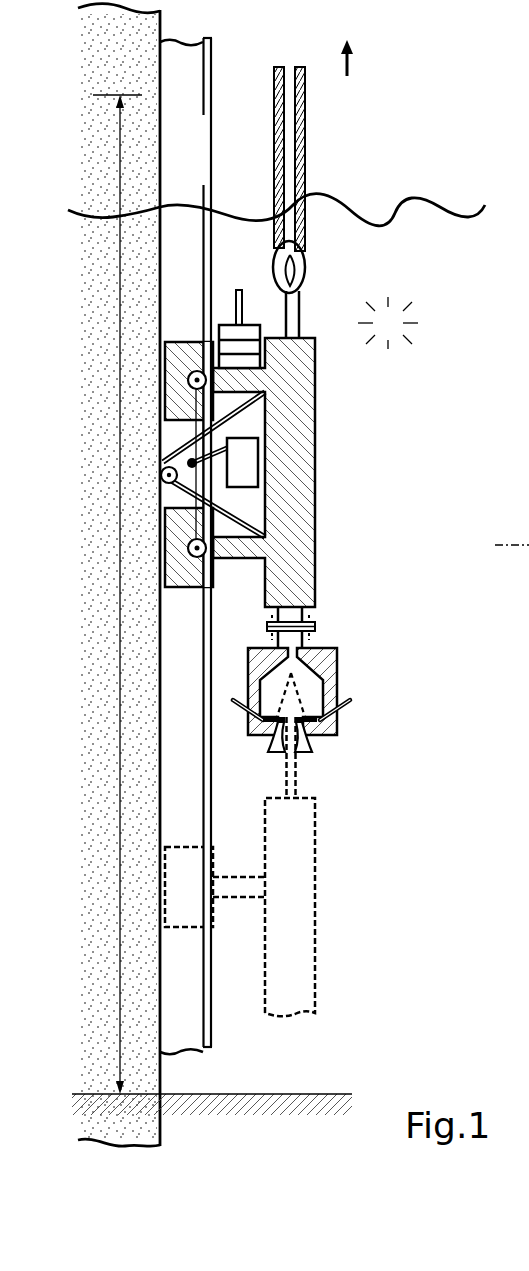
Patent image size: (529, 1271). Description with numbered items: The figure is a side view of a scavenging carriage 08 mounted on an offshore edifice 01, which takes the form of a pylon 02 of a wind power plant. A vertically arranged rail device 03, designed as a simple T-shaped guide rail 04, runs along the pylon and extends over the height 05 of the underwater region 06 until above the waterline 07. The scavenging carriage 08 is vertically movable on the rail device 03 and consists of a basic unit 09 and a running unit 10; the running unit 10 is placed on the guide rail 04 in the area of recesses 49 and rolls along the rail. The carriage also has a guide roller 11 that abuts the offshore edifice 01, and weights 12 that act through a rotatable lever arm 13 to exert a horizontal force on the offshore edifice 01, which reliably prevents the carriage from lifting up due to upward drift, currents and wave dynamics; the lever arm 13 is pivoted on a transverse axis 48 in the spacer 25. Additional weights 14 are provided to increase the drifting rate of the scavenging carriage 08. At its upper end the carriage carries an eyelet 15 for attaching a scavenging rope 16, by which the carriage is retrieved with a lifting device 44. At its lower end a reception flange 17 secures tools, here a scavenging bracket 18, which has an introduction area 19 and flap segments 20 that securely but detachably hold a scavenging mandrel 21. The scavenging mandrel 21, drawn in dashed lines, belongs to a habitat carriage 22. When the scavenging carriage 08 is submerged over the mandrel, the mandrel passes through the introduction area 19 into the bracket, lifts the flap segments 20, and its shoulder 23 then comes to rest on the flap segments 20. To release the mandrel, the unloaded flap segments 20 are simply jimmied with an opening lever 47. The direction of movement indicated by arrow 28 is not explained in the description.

The offshore edifice 01 is at (154, 574).
The pylon 02 is at (138, 32).
The rail device 03 is at (130, 922).
The guide rail 04 is at (178, 1030).
The height 05 is at (117, 594).
The underwater region 06 is at (388, 323).
The waterline 07 is at (397, 214).
The scavenging carriage 08 is at (279, 472).
The basic unit 09 is at (299, 472).
The running unit 10 is at (245, 550).
The guide roller 11 is at (162, 478).
The weights 12 is at (190, 462).
The lever arm 13 is at (242, 459).
The additional weights 14 is at (247, 332).
The eyelet 15 is at (305, 273).
The scavenging rope 16 is at (300, 194).
The reception flange 17 is at (316, 626).
The scavenging bracket 18 is at (308, 680).
The introduction area 19 is at (282, 750).
The flap segments 20 is at (312, 725).
The scavenging mandrel 21 is at (258, 678).
The habitat carriage 22 is at (293, 837).
The shoulder 23 is at (298, 710).
The spacer 25 is at (185, 442).
The vessel direction 28 is at (423, 566).
The lifting device 44 is at (332, 58).
The opening lever 47 is at (331, 718).
The transverse axis 48 is at (177, 485).
The recesses 49 is at (204, 148).